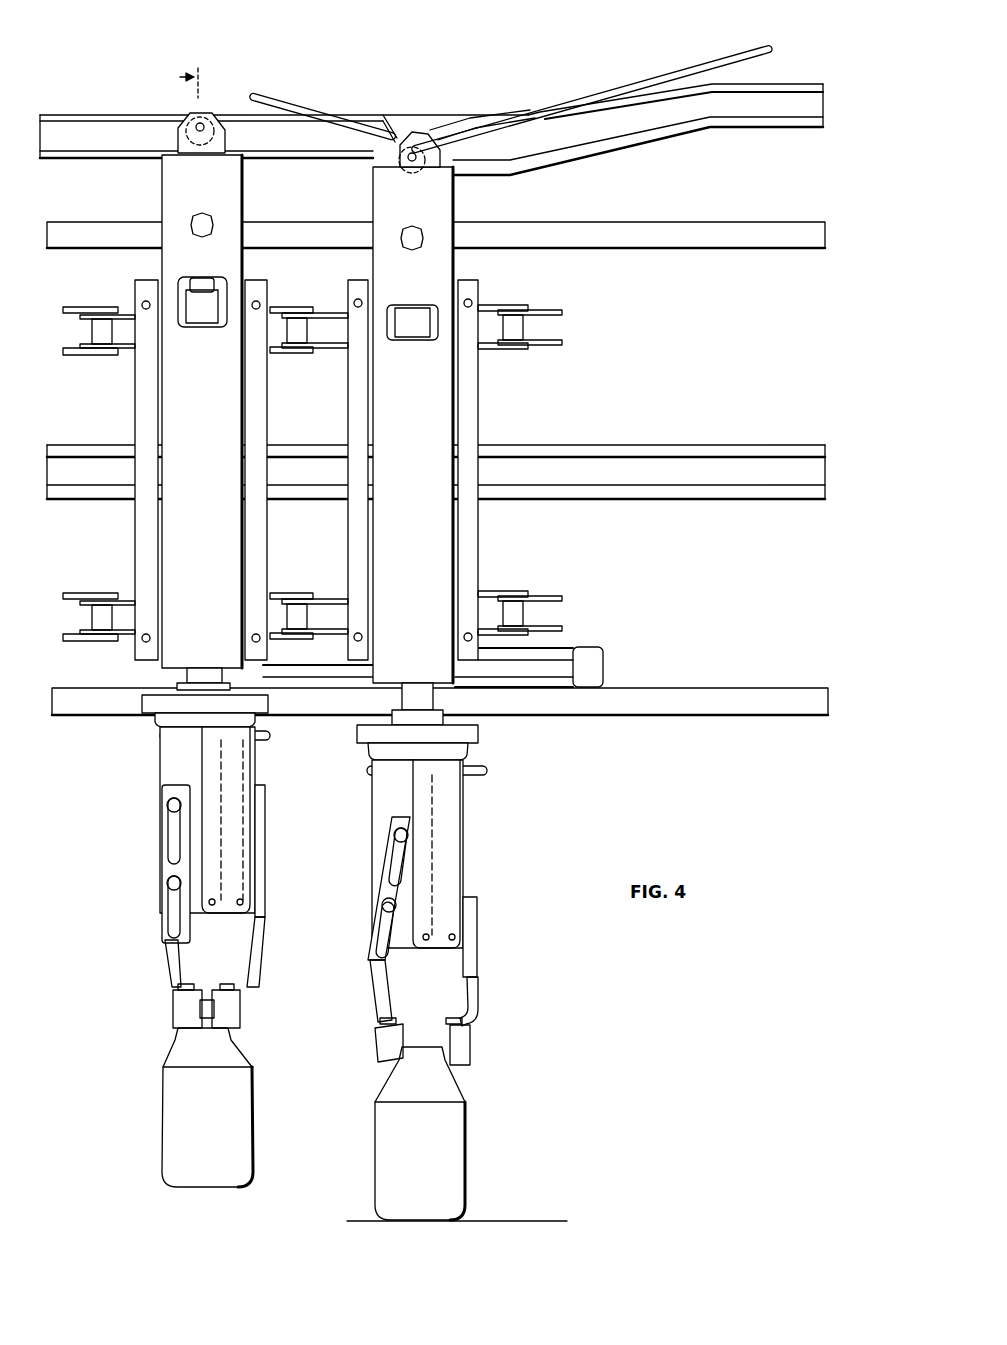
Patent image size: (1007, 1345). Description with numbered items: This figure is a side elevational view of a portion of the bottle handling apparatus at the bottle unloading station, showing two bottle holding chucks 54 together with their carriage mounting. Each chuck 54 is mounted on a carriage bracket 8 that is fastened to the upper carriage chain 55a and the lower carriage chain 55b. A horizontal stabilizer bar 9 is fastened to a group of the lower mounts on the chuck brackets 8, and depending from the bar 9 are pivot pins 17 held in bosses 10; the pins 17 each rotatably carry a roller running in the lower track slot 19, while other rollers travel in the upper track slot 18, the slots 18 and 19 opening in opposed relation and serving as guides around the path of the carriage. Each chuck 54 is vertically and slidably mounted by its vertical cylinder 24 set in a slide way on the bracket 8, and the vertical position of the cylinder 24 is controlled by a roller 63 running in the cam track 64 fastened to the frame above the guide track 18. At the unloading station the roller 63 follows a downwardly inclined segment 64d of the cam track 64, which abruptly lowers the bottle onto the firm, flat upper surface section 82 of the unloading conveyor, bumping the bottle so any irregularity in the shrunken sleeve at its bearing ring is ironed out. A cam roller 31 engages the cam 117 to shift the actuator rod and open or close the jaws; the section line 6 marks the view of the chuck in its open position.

The section line 6- 6 is at (205, 428).
The carriage bracket 8 is at (262, 383).
The horizontal stabilizer bar 9 is at (566, 650).
The boss 10 is at (595, 656).
The pivot pin 17 is at (603, 685).
The upper track slot 18 is at (521, 247).
The lower track slot 19 is at (693, 688).
The vertical cylinder 24 is at (207, 398).
The cam roller 31 is at (205, 113).
The chuck 54 is at (137, 738).
The upper carriage chain 55a is at (530, 347).
The lower carriage chain 55b is at (528, 591).
The roller 63 is at (178, 128).
The cam track 64 is at (104, 150).
The downwardly inclined segment 64d is at (388, 146).
The upper surface section 82 is at (492, 1220).
The cam 117 is at (314, 110).